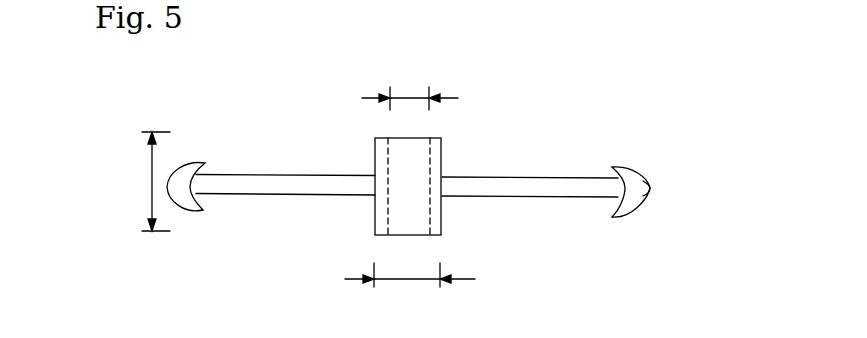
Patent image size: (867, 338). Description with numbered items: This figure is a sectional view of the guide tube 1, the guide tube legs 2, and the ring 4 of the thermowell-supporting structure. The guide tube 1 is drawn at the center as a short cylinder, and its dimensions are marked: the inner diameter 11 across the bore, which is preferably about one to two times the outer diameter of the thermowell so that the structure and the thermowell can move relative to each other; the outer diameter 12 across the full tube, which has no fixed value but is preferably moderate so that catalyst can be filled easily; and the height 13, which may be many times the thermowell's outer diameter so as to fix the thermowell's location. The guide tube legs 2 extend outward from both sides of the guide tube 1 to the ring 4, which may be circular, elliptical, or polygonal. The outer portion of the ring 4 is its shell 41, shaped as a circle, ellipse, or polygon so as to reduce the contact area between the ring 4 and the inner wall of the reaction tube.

The guide tube 1 is at (442, 150).
The inner diameter 11 is at (410, 81).
The outer diameter 12 is at (410, 294).
The height 13 is at (134, 181).
The guide tube leg 2 is at (573, 183).
The ring 4 is at (638, 180).
The shell 41 is at (651, 189).